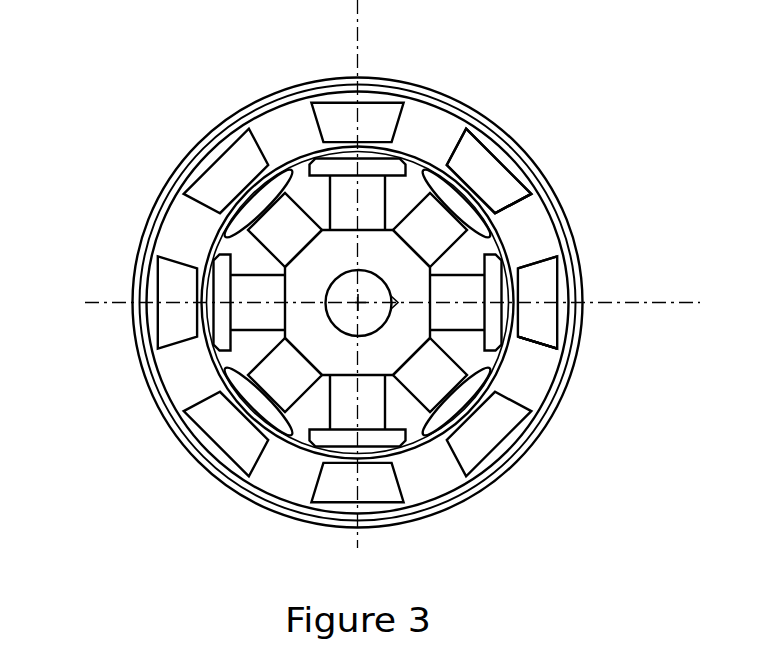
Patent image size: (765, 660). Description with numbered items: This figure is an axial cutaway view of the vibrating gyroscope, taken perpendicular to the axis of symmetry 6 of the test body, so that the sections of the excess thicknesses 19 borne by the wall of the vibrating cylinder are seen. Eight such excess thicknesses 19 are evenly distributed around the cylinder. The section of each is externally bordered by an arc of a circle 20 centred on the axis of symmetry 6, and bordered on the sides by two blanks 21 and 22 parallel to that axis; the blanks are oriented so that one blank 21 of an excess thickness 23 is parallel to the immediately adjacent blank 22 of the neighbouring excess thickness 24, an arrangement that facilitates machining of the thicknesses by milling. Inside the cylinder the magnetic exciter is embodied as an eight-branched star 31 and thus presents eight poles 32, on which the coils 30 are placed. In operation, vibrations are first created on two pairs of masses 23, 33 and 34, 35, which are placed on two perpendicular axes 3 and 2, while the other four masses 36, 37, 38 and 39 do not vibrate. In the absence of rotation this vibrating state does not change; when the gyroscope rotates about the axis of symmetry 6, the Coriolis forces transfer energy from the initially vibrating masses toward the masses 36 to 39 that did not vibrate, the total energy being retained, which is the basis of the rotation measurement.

The axis 2 is at (360, 78).
The axis 3 is at (603, 300).
The axis of symmetry 6 is at (174, 322).
The excess thicknesses 19 is at (478, 152).
The arc of a circle 20 is at (503, 165).
The blank 21 is at (543, 257).
The blank 22 is at (517, 207).
The excess thickness 23 is at (538, 343).
The excess thickness 24 is at (510, 187).
The coils 30 is at (367, 420).
The eight-branched star 31 is at (323, 263).
The poles 32 is at (290, 440).
The mass 33 is at (337, 308).
The mass 34 is at (370, 110).
The mass 35 is at (365, 487).
The mass 36 is at (233, 438).
The mass 37 is at (500, 193).
The mass 38 is at (227, 167).
The mass 39 is at (483, 430).